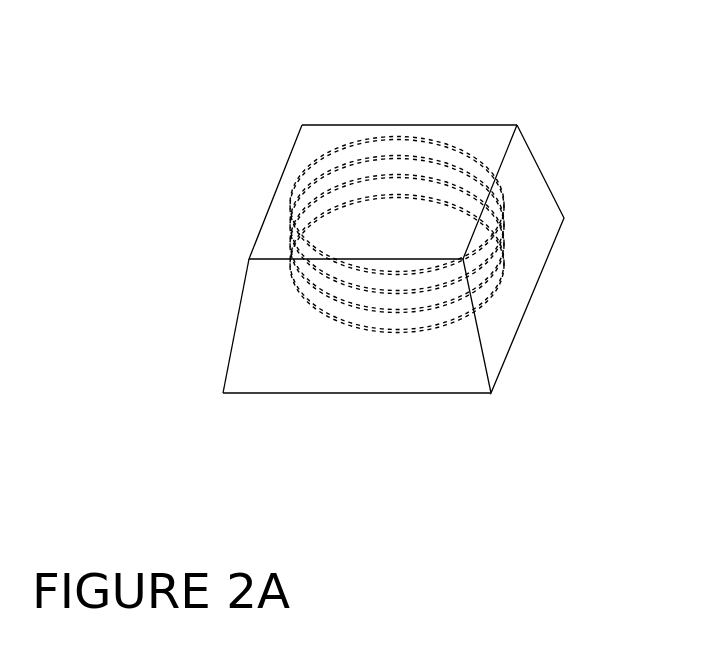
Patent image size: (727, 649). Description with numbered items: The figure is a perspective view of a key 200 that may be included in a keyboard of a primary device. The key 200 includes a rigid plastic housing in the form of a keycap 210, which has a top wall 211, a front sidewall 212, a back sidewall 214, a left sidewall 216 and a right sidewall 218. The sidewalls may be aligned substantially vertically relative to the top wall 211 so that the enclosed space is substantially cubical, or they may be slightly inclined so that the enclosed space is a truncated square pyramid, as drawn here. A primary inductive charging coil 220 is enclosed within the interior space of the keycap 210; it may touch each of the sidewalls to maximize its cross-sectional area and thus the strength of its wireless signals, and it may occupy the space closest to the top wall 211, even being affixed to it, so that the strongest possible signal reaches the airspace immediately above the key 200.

The key 200 is at (375, 254).
The keycap 210 is at (375, 241).
The top wall 211 is at (320, 133).
The front sidewall 212 is at (302, 348).
The back sidewall 214 is at (358, 125).
The left sidewall 216 is at (247, 273).
The right sidewall 218 is at (527, 200).
The primary inductive charging coil 220 is at (450, 138).